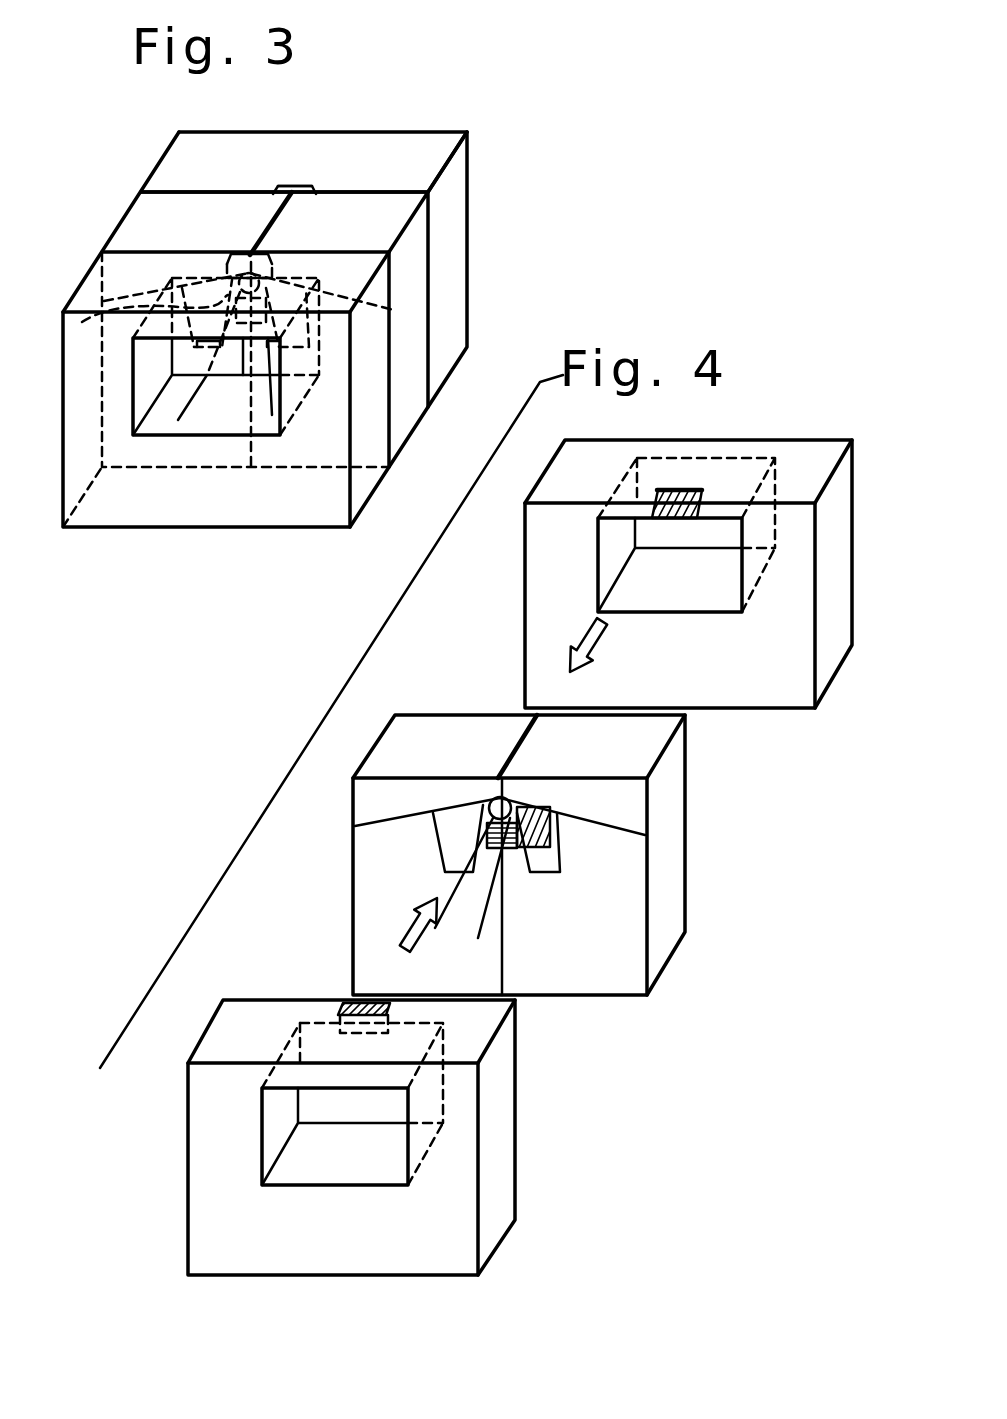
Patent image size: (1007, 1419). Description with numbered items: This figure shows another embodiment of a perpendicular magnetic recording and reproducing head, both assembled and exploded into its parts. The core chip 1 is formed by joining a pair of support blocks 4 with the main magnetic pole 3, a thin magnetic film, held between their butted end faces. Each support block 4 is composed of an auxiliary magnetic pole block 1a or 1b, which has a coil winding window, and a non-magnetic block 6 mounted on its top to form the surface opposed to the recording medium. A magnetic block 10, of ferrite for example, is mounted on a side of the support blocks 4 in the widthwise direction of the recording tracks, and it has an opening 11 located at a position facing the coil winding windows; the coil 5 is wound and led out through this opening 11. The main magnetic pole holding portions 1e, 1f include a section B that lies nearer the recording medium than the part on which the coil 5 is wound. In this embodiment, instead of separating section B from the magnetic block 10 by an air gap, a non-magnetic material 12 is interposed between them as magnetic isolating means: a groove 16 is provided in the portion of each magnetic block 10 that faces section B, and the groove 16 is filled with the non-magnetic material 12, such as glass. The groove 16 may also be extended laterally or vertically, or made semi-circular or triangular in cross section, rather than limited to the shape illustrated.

In FIG. 3, the core chip 1 is at (522, 220).
In FIG. 4, the auxiliary magnetic pole block 1a is at (367, 905).
In FIG. 4, the auxiliary magnetic pole block 1b is at (618, 970).
In FIG. 3, the main magnetic pole holding portion 1e is at (345, 333).
In FIG. 4, the main magnetic pole holding portion 1e is at (443, 860).
In FIG. 3, the main magnetic pole holding portion 1f is at (270, 323).
In FIG. 4, the main magnetic pole holding portion 1f is at (510, 860).
In FIG. 3, the main magnetic pole 3 is at (263, 228).
In FIG. 4, the main magnetic pole 3 is at (516, 745).
In FIG. 3, the support block 4 is at (413, 385).
In FIG. 4, the support block 4 is at (370, 942).
In FIG. 3, the coil 5 is at (273, 400).
In FIG. 4, the coil 5 is at (510, 885).
In FIG. 3, the non-magnetic block 6 is at (402, 208).
In FIG. 4, the non-magnetic block 6 is at (385, 745).
In FIG. 3, the magnetic block 10 is at (96, 255).
In FIG. 4, the magnetic block 10 is at (833, 640).
In FIG. 3, the opening 11 is at (203, 412).
In FIG. 4, the opening 11 is at (332, 1172).
In FIG. 3, the non-magnetic material 12 is at (298, 186).
In FIG. 4, the non-magnetic material 12 is at (670, 490).
In FIG. 3, the groove 16 is at (310, 192).
In FIG. 4, the groove 16 is at (690, 490).
In FIG. 3, the section B is at (85, 297).
In FIG. 4, the section B is at (478, 820).